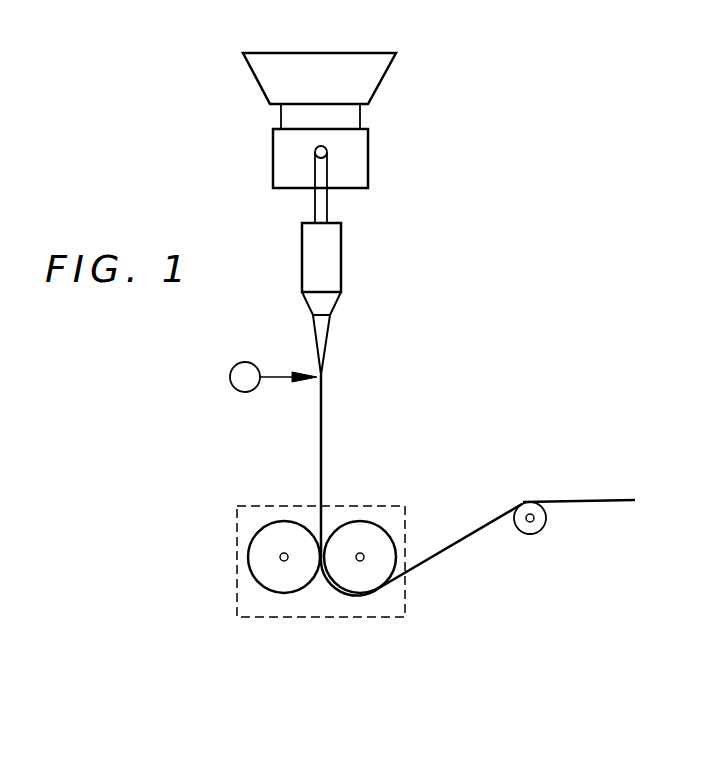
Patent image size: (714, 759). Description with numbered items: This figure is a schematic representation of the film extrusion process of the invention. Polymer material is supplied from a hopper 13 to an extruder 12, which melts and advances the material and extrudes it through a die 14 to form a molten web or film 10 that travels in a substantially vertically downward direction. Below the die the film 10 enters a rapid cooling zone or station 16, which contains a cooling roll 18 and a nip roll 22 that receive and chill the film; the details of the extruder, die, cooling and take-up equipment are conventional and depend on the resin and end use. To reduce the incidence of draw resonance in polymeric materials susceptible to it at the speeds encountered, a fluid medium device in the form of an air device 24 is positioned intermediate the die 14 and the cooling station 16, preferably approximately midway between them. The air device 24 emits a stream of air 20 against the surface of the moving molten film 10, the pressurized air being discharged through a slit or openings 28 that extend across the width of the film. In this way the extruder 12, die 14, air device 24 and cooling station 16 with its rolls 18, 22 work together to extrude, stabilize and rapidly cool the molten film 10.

The molten web or film 10 is at (322, 412).
The extruder 12 is at (363, 163).
The hopper 13 is at (377, 73).
The die 14 is at (336, 246).
The rapid cooling zone or station 16 is at (267, 505).
The cooling roll 18 is at (363, 582).
The stream of air 20 is at (280, 373).
The nip roll 22 is at (280, 580).
The air device 24 is at (255, 362).
The slit or openings 28 is at (262, 390).